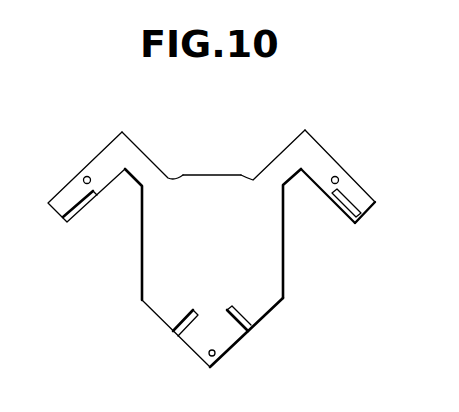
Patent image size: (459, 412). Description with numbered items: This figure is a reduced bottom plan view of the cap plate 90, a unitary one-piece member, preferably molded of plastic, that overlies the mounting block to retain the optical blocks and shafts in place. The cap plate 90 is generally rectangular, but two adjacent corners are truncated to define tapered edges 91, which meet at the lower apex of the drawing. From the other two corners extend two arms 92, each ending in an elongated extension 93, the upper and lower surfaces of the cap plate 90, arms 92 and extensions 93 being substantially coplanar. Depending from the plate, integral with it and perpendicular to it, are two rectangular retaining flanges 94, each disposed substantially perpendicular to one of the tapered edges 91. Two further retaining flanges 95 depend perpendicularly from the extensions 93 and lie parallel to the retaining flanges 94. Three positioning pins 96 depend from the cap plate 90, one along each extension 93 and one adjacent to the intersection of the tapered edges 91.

The cap plate 90 is at (206, 196).
The tapered edges 91 is at (220, 362).
The arms 92 is at (137, 160).
The elongated extension 93 is at (106, 162).
The retaining flanges 94 is at (228, 310).
The retaining flanges 95 is at (77, 218).
The positioning pins 96 is at (84, 179).